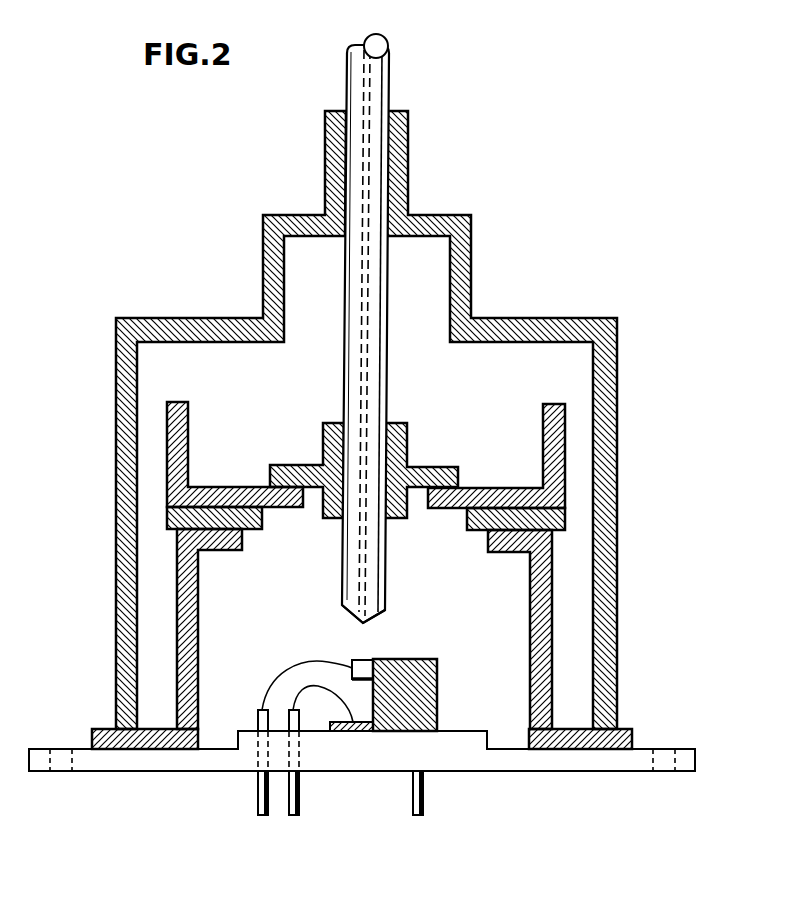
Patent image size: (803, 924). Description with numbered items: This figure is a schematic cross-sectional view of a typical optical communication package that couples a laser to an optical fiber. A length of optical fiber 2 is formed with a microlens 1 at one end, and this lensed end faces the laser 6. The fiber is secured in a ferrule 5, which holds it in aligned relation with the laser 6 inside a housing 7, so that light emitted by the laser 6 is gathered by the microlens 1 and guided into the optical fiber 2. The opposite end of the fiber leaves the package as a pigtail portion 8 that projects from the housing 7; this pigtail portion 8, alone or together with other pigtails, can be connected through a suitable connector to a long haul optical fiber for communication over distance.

The microlens 1 is at (357, 623).
The optical fiber 2 is at (387, 335).
The ferrule 5 is at (408, 442).
The laser 6 is at (360, 658).
The housing 7 is at (613, 453).
The pigtail portion 8 is at (390, 61).